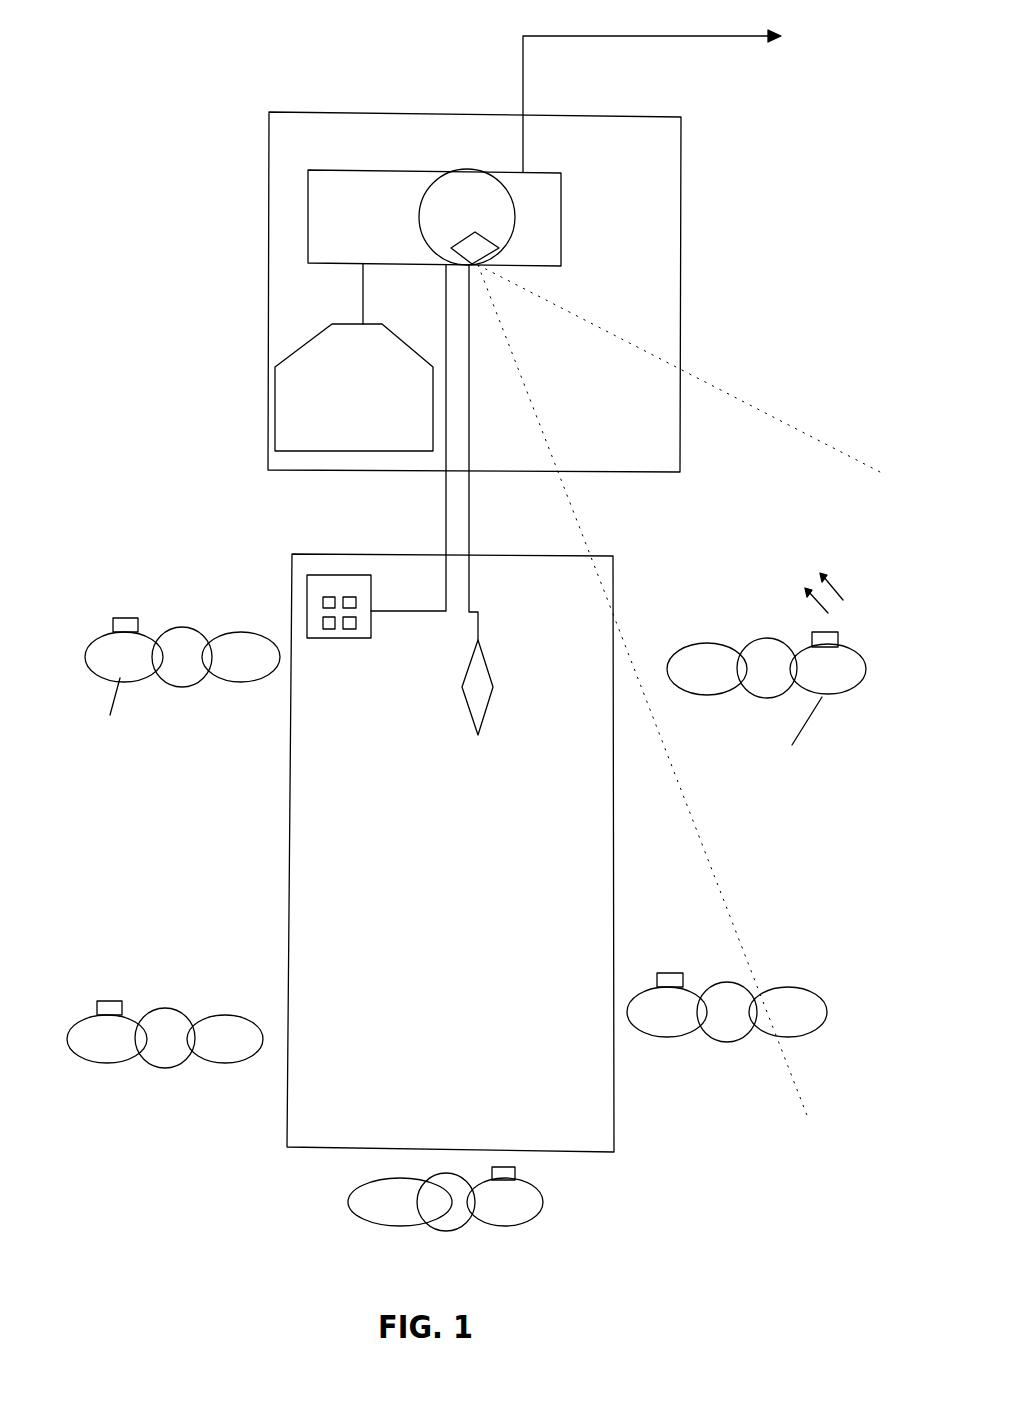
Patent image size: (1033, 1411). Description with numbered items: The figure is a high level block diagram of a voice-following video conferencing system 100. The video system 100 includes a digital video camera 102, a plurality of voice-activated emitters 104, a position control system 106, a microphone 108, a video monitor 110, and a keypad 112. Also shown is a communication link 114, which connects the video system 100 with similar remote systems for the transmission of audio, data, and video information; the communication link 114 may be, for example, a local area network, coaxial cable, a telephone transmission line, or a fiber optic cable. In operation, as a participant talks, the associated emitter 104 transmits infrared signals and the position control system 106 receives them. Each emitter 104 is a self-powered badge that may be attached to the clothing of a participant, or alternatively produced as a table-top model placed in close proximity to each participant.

The voice-following video conferencing system 100 is at (92, 27).
The digital video camera 102 is at (513, 218).
The voice-activated emitters 104 is at (128, 628).
The position control system 106 is at (372, 200).
The microphone 108 is at (477, 747).
The video monitor 110 is at (400, 452).
The keypad 112 is at (376, 482).
The communication link 114 is at (605, 101).